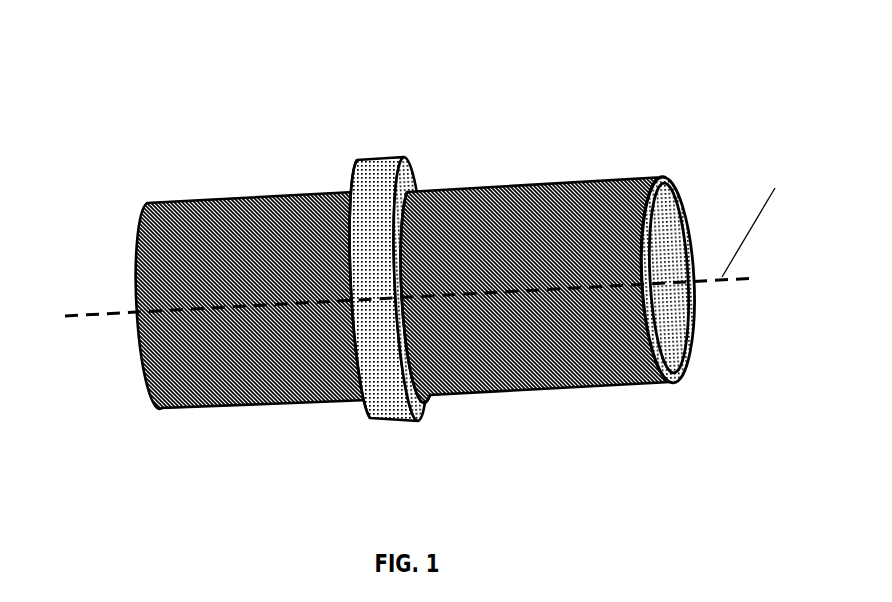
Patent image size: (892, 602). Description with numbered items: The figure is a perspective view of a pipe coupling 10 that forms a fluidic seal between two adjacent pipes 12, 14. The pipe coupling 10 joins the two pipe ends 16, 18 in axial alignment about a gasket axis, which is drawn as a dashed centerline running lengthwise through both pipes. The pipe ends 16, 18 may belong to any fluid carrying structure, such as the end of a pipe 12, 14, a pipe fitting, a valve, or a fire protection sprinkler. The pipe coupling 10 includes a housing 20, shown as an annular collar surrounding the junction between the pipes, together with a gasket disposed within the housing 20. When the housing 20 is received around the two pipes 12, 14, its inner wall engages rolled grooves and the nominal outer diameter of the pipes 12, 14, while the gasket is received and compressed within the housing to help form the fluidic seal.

The pipe coupling 10 is at (435, 261).
The pipe 12 is at (550, 244).
The pipe 14 is at (212, 253).
The pipe end 16 is at (408, 218).
The pipe end 18 is at (347, 335).
The housing 20 is at (338, 299).